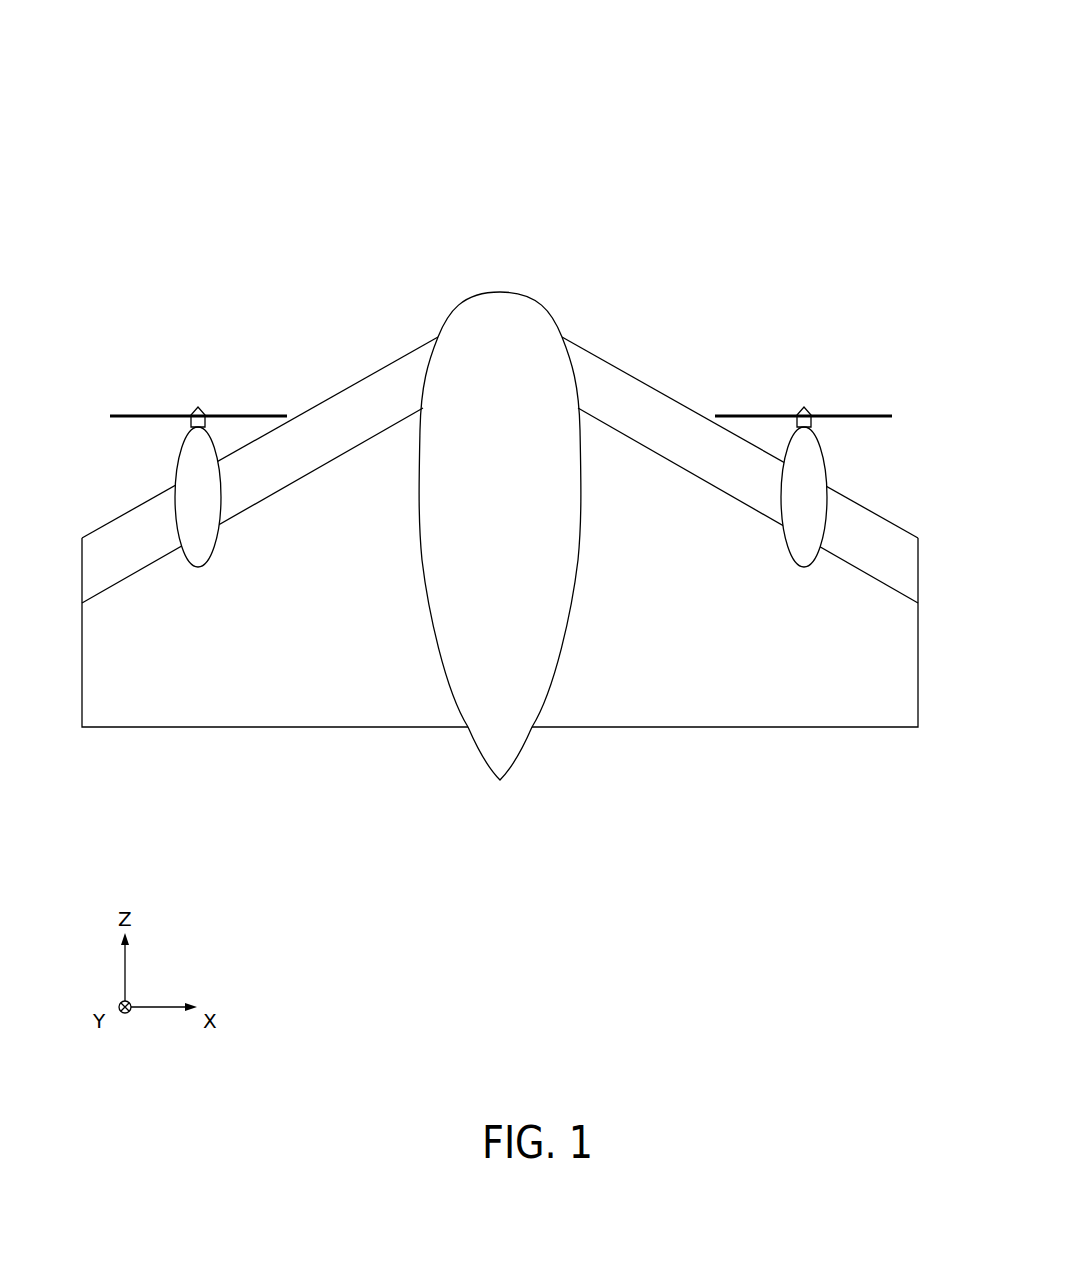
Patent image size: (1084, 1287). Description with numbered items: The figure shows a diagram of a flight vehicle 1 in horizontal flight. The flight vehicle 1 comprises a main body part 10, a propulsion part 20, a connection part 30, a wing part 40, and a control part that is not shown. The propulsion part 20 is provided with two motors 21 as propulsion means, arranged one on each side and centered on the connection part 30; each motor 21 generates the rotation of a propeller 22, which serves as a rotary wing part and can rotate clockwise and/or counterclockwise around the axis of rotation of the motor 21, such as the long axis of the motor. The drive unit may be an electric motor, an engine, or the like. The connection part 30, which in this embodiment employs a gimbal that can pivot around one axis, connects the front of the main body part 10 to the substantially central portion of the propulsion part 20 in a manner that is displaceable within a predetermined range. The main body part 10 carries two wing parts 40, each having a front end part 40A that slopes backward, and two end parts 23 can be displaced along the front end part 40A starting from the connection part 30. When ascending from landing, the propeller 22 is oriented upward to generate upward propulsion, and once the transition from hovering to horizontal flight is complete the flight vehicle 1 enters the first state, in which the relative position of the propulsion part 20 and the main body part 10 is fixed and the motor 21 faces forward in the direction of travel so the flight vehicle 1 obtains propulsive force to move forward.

The flight vehicle 1 is at (275, 146).
The main body part 10 is at (533, 487).
The propulsion part 20 is at (502, 457).
The motor 21 is at (190, 422).
The propeller 22 is at (142, 416).
The end part 23 is at (342, 403).
The connection part 30 is at (500, 260).
The wing part 40 is at (500, 560).
The front end part 40A is at (313, 472).